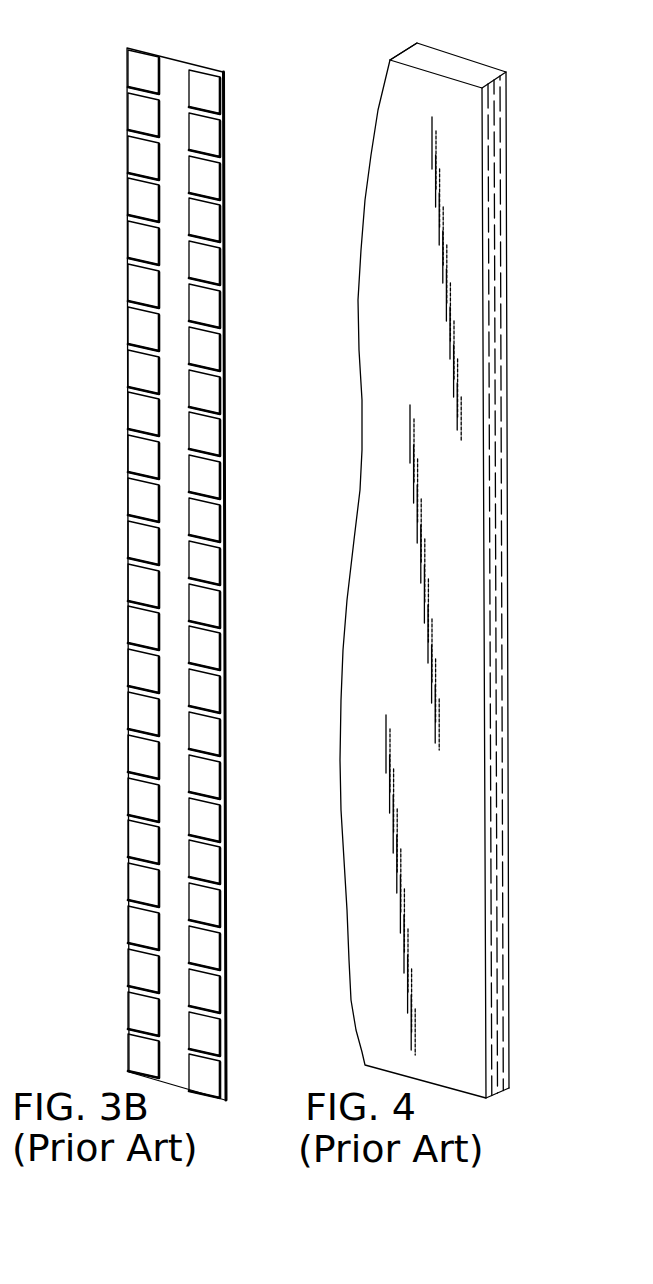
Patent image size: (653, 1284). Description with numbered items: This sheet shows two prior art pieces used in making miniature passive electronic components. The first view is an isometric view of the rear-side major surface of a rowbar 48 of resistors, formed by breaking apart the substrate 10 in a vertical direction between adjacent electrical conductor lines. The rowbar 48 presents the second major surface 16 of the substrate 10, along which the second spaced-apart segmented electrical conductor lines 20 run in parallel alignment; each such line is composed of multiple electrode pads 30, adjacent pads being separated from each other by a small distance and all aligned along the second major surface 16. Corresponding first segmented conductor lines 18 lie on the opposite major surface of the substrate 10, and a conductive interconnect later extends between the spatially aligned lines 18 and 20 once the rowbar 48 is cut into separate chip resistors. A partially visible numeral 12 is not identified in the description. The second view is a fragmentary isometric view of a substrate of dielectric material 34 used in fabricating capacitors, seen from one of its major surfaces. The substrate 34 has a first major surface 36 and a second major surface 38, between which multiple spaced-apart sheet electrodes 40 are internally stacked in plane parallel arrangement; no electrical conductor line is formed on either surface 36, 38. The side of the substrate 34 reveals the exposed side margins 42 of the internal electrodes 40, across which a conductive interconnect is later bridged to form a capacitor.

In FIG. 3B, the substrate 10 is at (127, 48).
In FIG. 3B, the substrate 12 is at (9, 572).
In FIG. 3B, the second major surface 16 is at (143, 44).
In FIG. 3B, the first spaced-apart segmented electrical conductor lines 18 is at (8, 275).
In FIG. 3B, the second spaced-apart segmented electrical conductor lines 20 is at (202, 67).
In FIG. 3B, the electrode pads 30 is at (210, 268).
In FIG. 3B, the rowbar 48 is at (112, 361).
In FIG. 4, the substrate of dielectric material 34 is at (412, 53).
In FIG. 4, the first major surface 36 is at (400, 108).
In FIG. 4, the second major surface 38 is at (445, 53).
In FIG. 4, the sheet electrodes 40 is at (495, 100).
In FIG. 4, the exposed side margins 42 is at (487, 80).